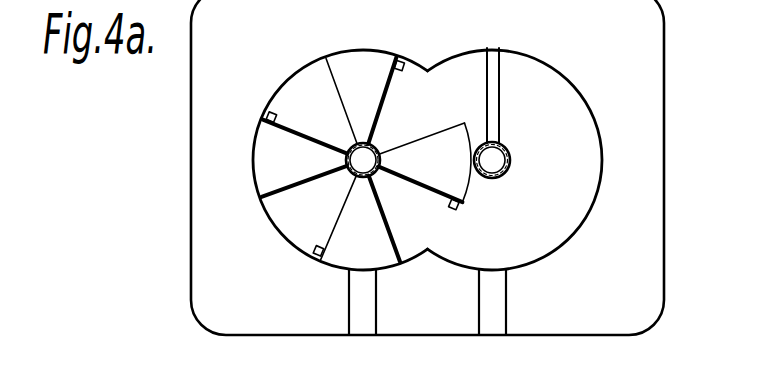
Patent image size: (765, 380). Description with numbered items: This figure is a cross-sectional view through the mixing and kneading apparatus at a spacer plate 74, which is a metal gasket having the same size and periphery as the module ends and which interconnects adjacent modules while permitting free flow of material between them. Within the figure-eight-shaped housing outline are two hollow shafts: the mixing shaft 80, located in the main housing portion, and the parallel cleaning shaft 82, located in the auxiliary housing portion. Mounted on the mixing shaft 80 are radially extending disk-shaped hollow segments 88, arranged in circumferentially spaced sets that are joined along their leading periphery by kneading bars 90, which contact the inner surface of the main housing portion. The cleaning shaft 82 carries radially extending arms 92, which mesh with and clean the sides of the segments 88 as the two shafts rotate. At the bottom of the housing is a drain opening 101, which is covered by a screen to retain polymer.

The spacer plate 74 is at (191, 155).
The mixing shaft 80 is at (376, 148).
The cleaning shaft 82 is at (511, 163).
The disk-shaped hollow segment 88 is at (418, 178).
The kneading bar 90 is at (320, 247).
The arm 92 is at (501, 108).
The drain opening 101 is at (350, 296).